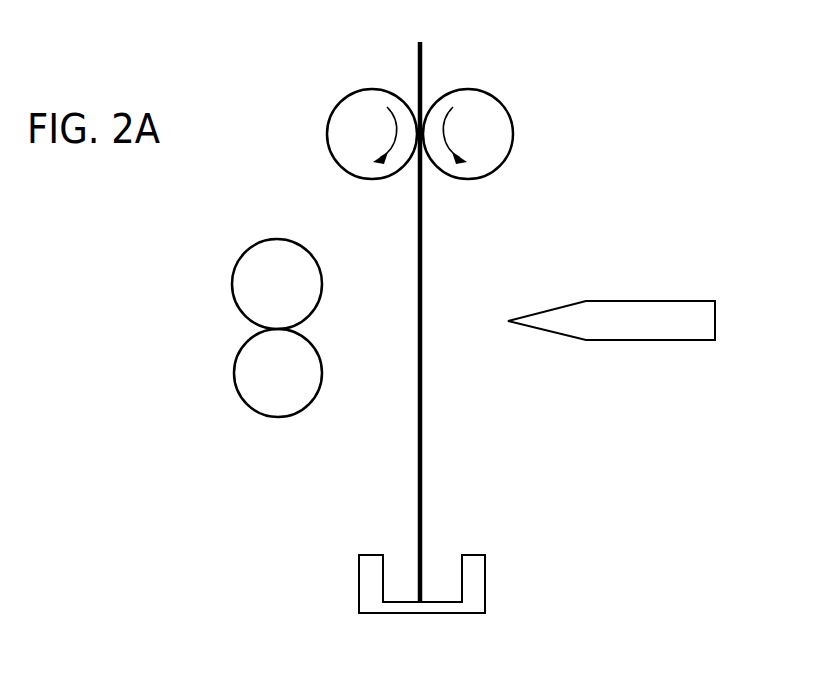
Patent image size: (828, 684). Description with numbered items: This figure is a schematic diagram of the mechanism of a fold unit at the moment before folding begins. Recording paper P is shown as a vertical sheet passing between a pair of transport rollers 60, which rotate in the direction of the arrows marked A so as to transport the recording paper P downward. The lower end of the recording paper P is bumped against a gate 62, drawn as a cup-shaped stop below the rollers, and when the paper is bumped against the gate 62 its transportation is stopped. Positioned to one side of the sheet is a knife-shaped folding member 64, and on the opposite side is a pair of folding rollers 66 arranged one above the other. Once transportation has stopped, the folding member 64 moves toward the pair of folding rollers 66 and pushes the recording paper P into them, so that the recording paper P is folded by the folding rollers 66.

The recording paper P is at (423, 60).
The pair of transport rollers 60 is at (508, 130).
The gate 62 is at (485, 595).
The knife-shaped folding member 64 is at (652, 301).
The pair of folding rollers 66 is at (278, 416).